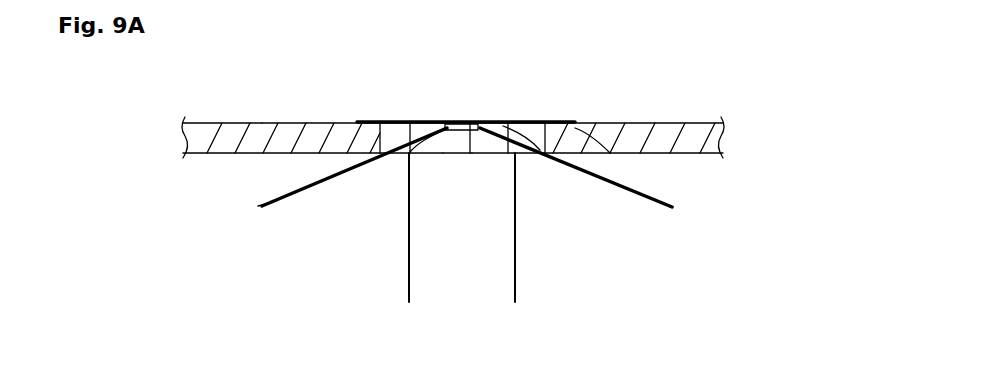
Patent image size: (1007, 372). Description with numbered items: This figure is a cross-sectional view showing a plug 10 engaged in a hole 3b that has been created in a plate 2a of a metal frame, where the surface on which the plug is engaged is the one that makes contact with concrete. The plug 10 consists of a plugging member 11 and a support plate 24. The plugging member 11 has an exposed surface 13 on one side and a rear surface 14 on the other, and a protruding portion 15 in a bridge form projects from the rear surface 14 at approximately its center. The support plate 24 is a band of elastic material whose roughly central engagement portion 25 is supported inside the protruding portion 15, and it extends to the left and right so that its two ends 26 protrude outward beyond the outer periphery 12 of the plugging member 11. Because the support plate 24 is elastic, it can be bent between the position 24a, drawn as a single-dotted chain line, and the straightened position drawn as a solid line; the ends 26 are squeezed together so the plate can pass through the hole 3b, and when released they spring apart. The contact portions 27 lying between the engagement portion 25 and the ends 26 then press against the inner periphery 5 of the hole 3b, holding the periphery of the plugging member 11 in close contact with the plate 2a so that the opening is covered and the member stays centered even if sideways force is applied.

The plate 2a is at (643, 122).
The inner periphery of the hole 5 is at (262, 122).
The plug 10 is at (562, 103).
The plugging member 11 is at (378, 122).
The outer periphery of the plugging member 12 is at (352, 122).
The surface 13 is at (535, 121).
The rear surface 14 is at (393, 283).
The protruding portion 15 is at (472, 153).
The support plate 24 is at (382, 151).
The bent position of the support plate 24a is at (408, 285).
The engagement portion 25 is at (462, 123).
The end of the support plate 26 is at (265, 205).
The contact portion 27 is at (410, 152).
The hole 3b is at (443, 153).